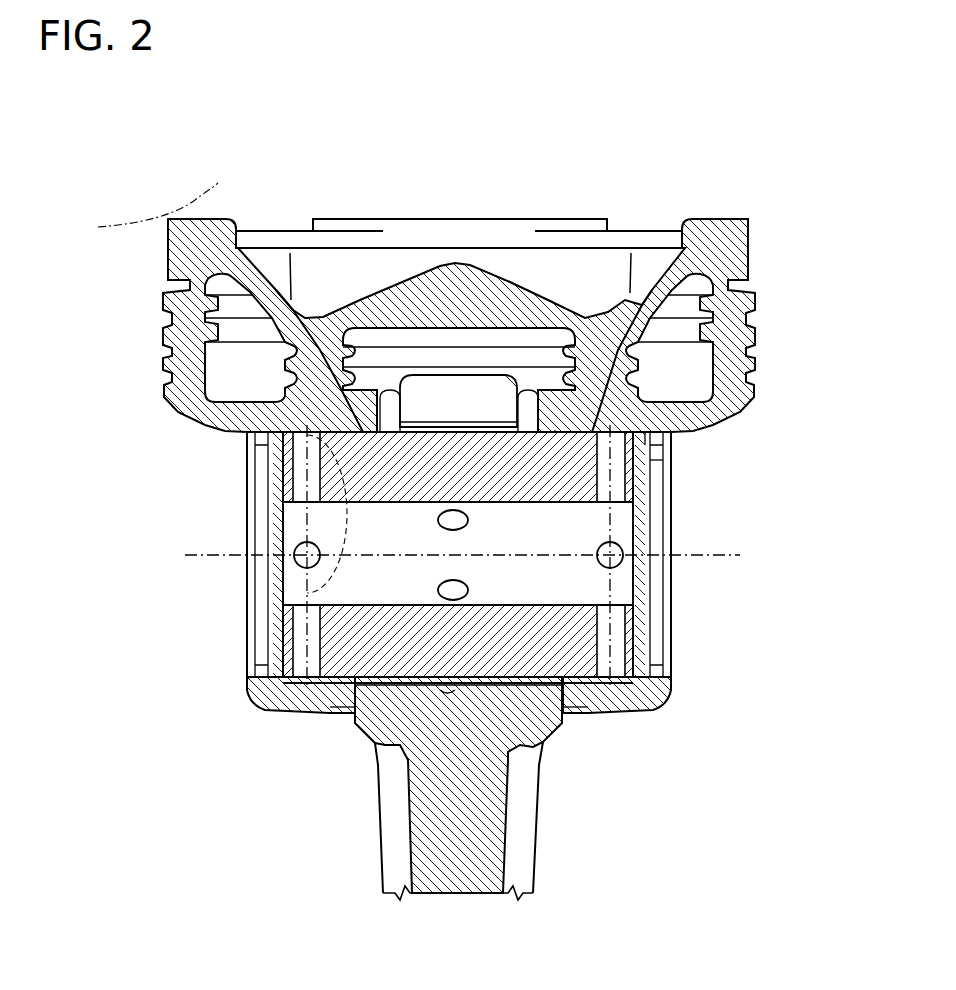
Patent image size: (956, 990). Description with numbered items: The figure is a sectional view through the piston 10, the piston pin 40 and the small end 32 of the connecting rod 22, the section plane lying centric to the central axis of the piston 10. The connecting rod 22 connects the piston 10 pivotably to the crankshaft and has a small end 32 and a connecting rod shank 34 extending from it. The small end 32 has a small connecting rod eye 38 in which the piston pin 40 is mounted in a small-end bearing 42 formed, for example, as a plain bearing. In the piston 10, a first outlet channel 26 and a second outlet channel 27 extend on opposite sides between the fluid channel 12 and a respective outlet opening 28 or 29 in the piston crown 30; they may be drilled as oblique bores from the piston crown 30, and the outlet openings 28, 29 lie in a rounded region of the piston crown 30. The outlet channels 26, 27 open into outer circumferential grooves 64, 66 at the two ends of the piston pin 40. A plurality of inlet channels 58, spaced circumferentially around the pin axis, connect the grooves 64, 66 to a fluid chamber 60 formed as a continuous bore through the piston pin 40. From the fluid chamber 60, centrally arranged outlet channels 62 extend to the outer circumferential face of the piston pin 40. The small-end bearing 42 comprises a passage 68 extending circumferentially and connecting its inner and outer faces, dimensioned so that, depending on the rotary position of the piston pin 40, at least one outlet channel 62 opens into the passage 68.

The piston 10 is at (158, 235).
The fluid channel 12 is at (165, 378).
The connecting rod 22 is at (324, 864).
The first outlet channel 26 is at (250, 436).
The second outlet channel 27 is at (650, 436).
The outlet opening 28 is at (322, 434).
The outlet opening 29 is at (622, 434).
The piston crown 30 is at (297, 470).
The small end 32 is at (558, 728).
The connecting rod shank 34 is at (538, 850).
The small connecting rod eye 38 is at (395, 695).
The piston pin 40 is at (668, 680).
The small-end bearing 42 is at (545, 790).
The inlet channels 58 is at (263, 488).
The fluid chamber 60 is at (612, 585).
The outlet channels 62 is at (470, 510).
The outer circumferential groove 64 is at (287, 698).
The outer circumferential groove 66 is at (655, 468).
The passage 68 is at (440, 697).